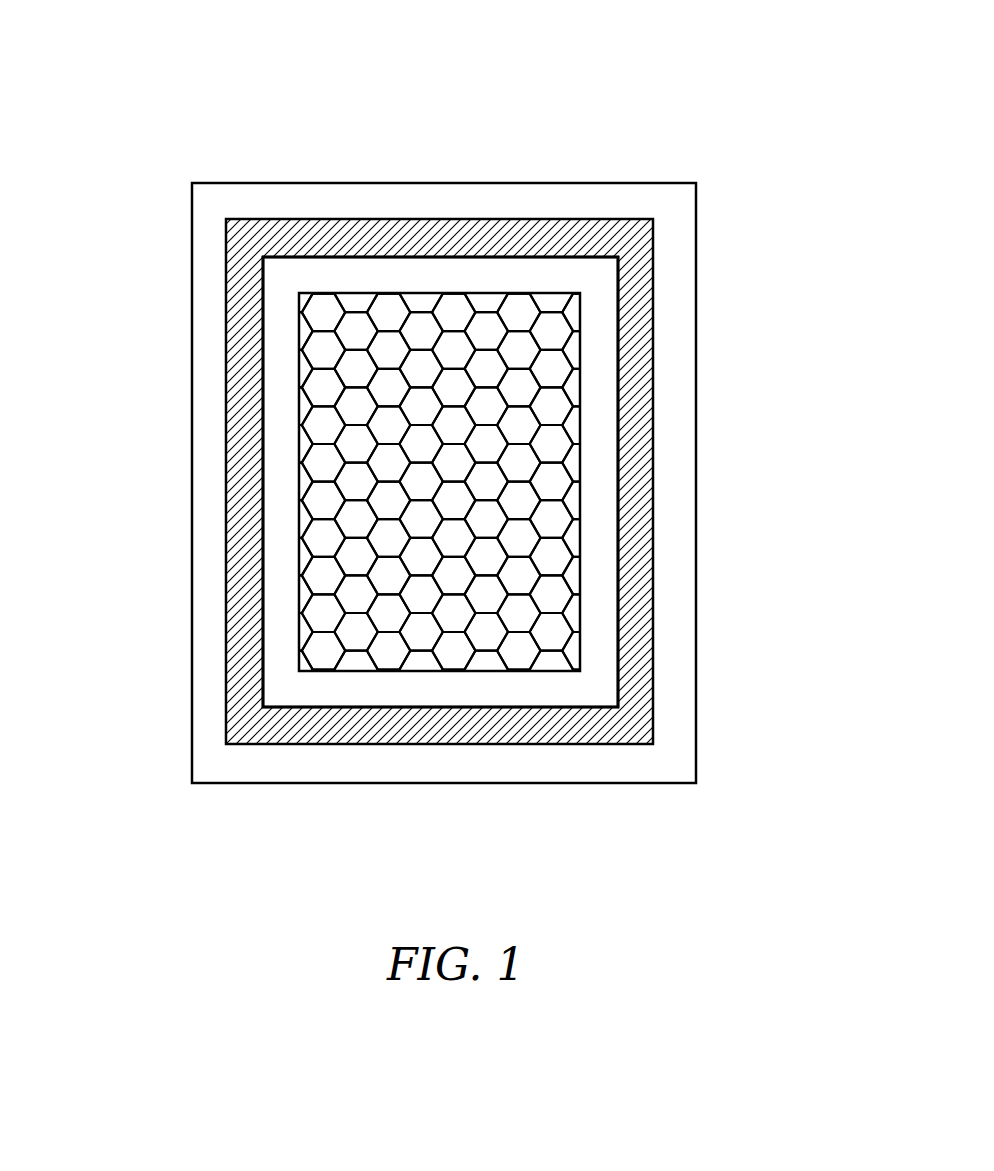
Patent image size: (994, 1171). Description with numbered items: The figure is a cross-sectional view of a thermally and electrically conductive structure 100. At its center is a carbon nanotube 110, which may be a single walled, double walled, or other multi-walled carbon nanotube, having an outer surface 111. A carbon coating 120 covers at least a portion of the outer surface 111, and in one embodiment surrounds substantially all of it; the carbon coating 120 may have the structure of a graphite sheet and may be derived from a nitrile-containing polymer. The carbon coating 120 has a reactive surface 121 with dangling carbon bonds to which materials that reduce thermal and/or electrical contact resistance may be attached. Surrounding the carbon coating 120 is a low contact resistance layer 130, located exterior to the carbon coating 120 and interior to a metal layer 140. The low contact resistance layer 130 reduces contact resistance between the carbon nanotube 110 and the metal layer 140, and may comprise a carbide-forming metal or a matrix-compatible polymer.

The thermally and electrically conductive structure 100 is at (784, 115).
The metal layer 140 is at (210, 425).
The low contact resistance layer 130 is at (635, 442).
The reactive surface 121 is at (618, 595).
The carbon coating 120 is at (598, 670).
The outer surface 111 is at (290, 660).
The carbon nanotube 110 is at (358, 519).